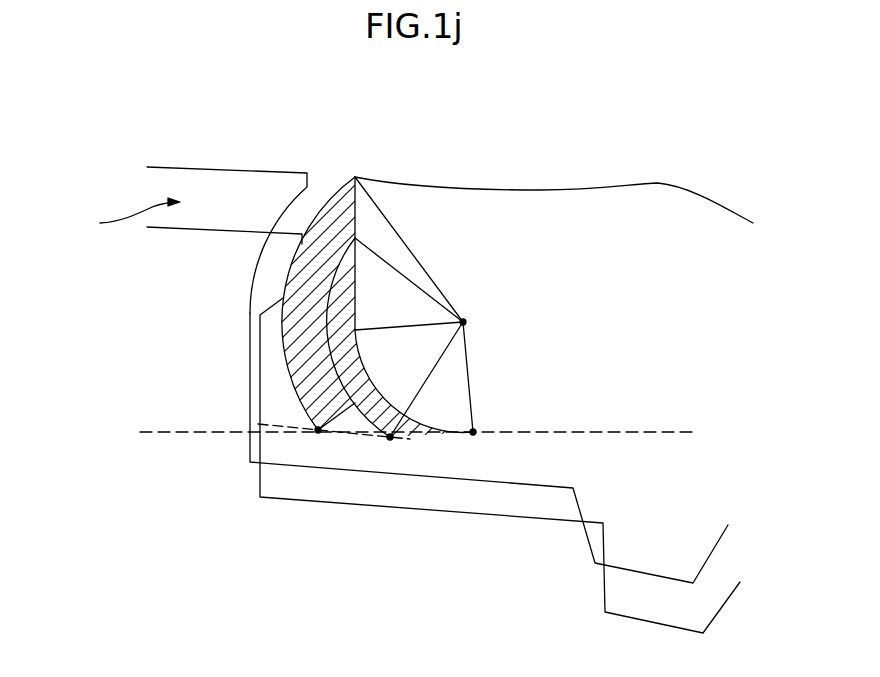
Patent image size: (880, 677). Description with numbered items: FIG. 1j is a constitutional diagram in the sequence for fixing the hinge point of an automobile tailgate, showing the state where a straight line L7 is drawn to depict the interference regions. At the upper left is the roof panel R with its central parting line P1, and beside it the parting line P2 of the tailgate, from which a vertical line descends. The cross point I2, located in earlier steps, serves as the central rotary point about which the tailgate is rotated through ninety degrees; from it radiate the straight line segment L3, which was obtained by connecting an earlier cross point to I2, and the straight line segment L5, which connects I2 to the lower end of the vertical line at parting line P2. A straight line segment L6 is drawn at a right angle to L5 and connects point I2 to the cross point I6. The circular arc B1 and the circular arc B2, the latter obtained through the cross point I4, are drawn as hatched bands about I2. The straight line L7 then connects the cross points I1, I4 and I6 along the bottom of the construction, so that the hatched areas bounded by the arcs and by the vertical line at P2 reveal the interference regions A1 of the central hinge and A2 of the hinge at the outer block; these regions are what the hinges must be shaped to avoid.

The central parting line P1 is at (307, 170).
The parting line of the tailgate P2 is at (355, 175).
The interference region of the central hinge A1 is at (343, 212).
The interference region of the hinge at the outer block A2 is at (352, 263).
The circular arc B1 is at (284, 366).
The circular arc B2 is at (334, 342).
The straight line segment L3 is at (415, 280).
The straight line segment L5 is at (405, 324).
The straight line segment L6 is at (467, 360).
The straight line L7 is at (670, 432).
The cross point I2 is at (442, 374).
The cross point I1 is at (320, 444).
The cross point I4 is at (387, 449).
The cross point I6 is at (476, 436).
The roof panel R is at (127, 219).